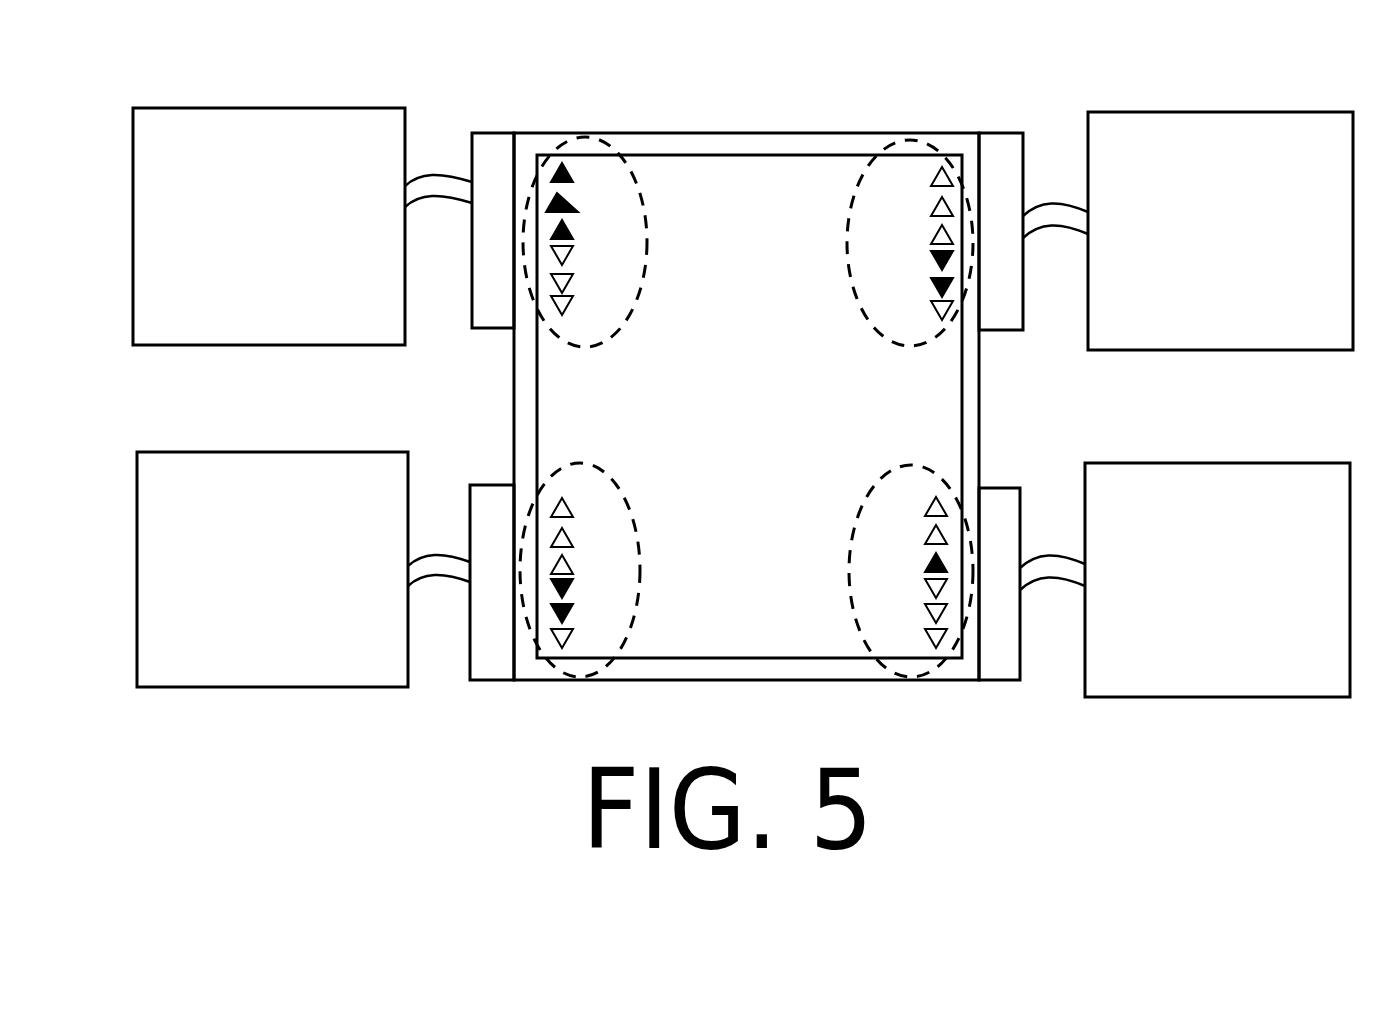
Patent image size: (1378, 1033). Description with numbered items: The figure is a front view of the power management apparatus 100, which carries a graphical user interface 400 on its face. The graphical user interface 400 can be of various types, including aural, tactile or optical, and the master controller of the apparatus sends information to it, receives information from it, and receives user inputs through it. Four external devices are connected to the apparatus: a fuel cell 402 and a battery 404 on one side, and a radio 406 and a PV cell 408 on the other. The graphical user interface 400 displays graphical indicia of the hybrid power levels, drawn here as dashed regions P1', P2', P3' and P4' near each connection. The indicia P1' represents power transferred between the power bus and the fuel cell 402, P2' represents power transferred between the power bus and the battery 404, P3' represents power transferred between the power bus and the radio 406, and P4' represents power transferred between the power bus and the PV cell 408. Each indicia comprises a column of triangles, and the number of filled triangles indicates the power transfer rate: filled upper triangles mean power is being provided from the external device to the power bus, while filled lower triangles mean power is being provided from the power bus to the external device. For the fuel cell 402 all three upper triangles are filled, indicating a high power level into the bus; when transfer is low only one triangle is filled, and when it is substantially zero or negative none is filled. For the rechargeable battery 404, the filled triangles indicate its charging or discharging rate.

The power management apparatus 100 is at (508, 126).
The graphical user interface 400 is at (692, 422).
The fuel cell 402 is at (322, 333).
The battery 404 is at (325, 637).
The radio 406 is at (1273, 303).
The PV cell 408 is at (1272, 648).
The power level indicia P1 P1' is at (478, 388).
The power level indicia P2 P2' is at (464, 711).
The power level indicia P3 P3' is at (992, 389).
The power level indicia P4 P4' is at (1027, 702).